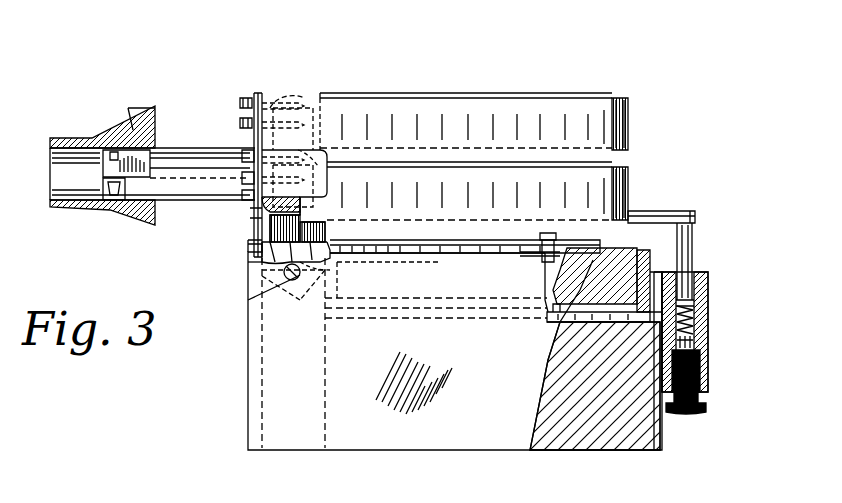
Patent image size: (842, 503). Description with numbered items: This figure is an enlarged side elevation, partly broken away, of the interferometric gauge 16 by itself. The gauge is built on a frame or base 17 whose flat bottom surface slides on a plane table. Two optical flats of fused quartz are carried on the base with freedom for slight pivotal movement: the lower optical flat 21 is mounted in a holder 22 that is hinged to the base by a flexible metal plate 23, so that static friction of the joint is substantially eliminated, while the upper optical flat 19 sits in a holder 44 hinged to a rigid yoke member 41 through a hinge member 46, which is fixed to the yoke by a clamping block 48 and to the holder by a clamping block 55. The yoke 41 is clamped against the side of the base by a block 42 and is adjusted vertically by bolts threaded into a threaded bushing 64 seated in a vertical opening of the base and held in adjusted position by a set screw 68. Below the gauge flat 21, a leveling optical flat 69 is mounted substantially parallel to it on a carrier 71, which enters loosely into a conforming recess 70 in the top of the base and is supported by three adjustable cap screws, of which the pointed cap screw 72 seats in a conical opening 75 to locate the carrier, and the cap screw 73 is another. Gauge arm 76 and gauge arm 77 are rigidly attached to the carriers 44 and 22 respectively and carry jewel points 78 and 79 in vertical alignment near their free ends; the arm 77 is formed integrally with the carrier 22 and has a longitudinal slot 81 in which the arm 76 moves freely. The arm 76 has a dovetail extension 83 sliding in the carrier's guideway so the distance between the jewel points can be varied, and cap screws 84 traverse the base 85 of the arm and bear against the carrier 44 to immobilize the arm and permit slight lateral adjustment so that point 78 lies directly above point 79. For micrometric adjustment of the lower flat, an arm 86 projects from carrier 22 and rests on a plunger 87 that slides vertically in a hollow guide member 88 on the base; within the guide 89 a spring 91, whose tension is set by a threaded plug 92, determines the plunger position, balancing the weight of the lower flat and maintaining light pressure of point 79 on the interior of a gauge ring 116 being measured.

The gauge ring 116 is at (134, 128).
The jewel point 78 is at (112, 151).
The gauge arm 76 is at (140, 152).
The gauge arm 77 is at (172, 199).
The longitudinal slot 81 is at (104, 182).
The jewel point 79 is at (102, 209).
The cap screws 84 is at (246, 103).
The clamping block 55 is at (252, 99).
The base 85 is at (249, 153).
The hinge member 46 is at (262, 105).
The dovetail extension 83 is at (290, 104).
The clamping block 48 is at (250, 214).
The flexible metal plate 23 is at (258, 239).
The yoke member 41 is at (328, 168).
The upper optical flat 19 is at (600, 94).
The holder 44 is at (624, 116).
The lower optical flat 21 is at (600, 164).
The holder 22 is at (625, 181).
The arm 86 is at (690, 212).
The plunger 87 is at (693, 245).
The hollow guide member 88 is at (700, 271).
The guide 89 is at (706, 285).
The spring 91 is at (700, 316).
The threaded plug 92 is at (704, 362).
The cap screw 72 is at (312, 232).
The leveling optical flat 69 is at (475, 246).
The cap screw 73 is at (557, 236).
The recess 70 is at (560, 327).
The carrier 71 is at (645, 250).
The base 17 is at (583, 442).
The gauge 16 is at (308, 461).
The block 42 is at (252, 368).
The threaded bushing 64 is at (262, 312).
The set screw 68 is at (262, 298).
The conical opening 75 is at (320, 266).